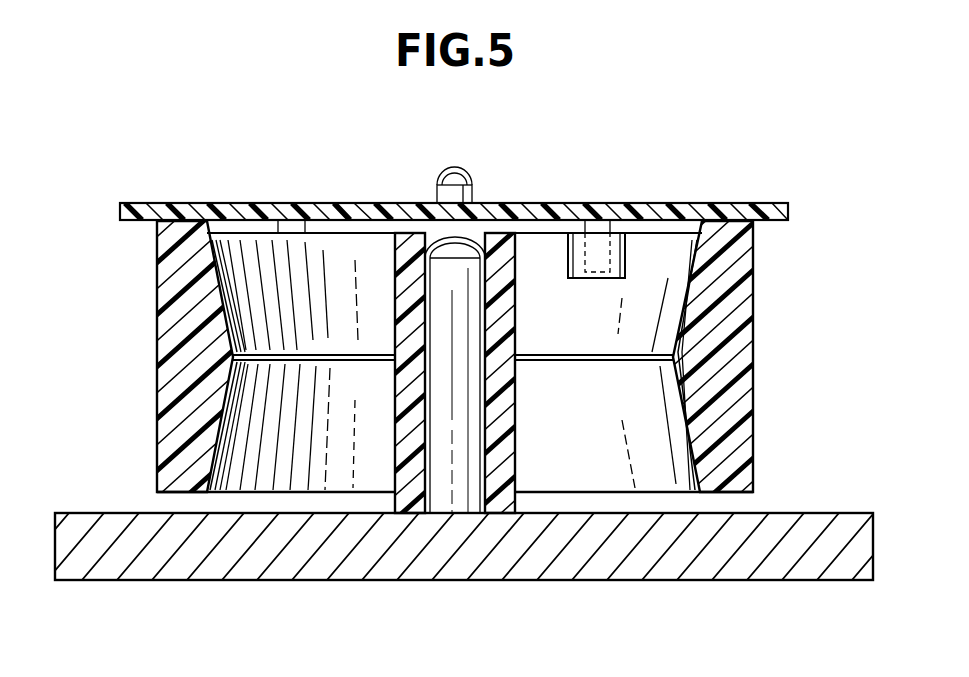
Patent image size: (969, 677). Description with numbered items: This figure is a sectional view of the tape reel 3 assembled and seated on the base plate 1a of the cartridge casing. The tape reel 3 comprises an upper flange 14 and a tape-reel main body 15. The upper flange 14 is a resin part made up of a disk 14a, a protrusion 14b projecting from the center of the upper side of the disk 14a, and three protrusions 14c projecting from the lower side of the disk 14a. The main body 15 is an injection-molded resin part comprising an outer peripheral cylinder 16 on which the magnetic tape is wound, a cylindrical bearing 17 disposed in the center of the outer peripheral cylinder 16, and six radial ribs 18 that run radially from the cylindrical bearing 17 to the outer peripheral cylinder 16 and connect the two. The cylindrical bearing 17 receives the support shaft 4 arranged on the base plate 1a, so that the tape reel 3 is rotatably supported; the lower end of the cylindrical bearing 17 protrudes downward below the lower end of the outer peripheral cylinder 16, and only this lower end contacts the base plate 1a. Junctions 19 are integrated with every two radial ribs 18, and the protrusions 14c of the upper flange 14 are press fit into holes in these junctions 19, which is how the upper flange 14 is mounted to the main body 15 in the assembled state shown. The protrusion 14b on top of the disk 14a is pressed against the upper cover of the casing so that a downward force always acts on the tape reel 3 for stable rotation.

The base plate 1a is at (735, 566).
The tape reel 3 is at (838, 237).
The support shaft 4 is at (458, 498).
The upper flange 14 is at (789, 213).
The disk 14a is at (680, 210).
The protrusion 14b is at (460, 172).
The protrusions 14c is at (295, 228).
The tape-reel main body 15 is at (455, 347).
The outer peripheral cylinder 16 is at (163, 356).
The cylindrical bearing 17 is at (508, 467).
The radial ribs 18 is at (370, 250).
The junctions 19 is at (575, 235).